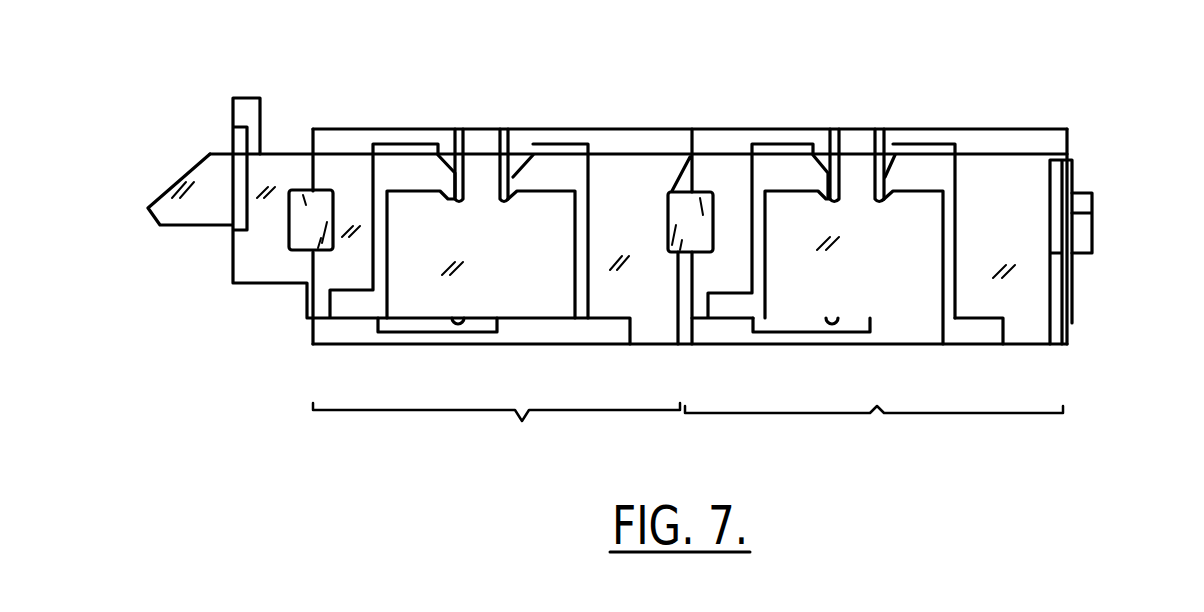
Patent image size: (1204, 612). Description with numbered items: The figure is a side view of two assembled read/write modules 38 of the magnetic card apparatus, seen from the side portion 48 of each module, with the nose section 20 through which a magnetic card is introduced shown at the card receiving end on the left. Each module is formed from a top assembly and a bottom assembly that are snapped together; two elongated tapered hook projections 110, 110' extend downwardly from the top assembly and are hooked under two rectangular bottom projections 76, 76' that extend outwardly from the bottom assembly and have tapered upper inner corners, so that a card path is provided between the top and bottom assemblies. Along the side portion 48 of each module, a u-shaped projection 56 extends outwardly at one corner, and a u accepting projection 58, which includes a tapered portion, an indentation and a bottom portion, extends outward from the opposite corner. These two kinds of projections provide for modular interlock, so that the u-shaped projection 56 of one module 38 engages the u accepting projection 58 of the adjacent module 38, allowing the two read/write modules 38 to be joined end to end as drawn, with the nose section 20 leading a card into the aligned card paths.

The nose section 20 is at (170, 176).
The reader module 38 is at (638, 304).
The side portion 48 is at (413, 300).
The u-shaped projection 56 is at (302, 232).
The u accepting projection 58 is at (305, 205).
The bottom projection 76 is at (594, 124).
The bottom projection 76' is at (773, 124).
The elongated tapered hook projection 110 is at (640, 118).
The elongated tapered hook projection 110' is at (723, 118).